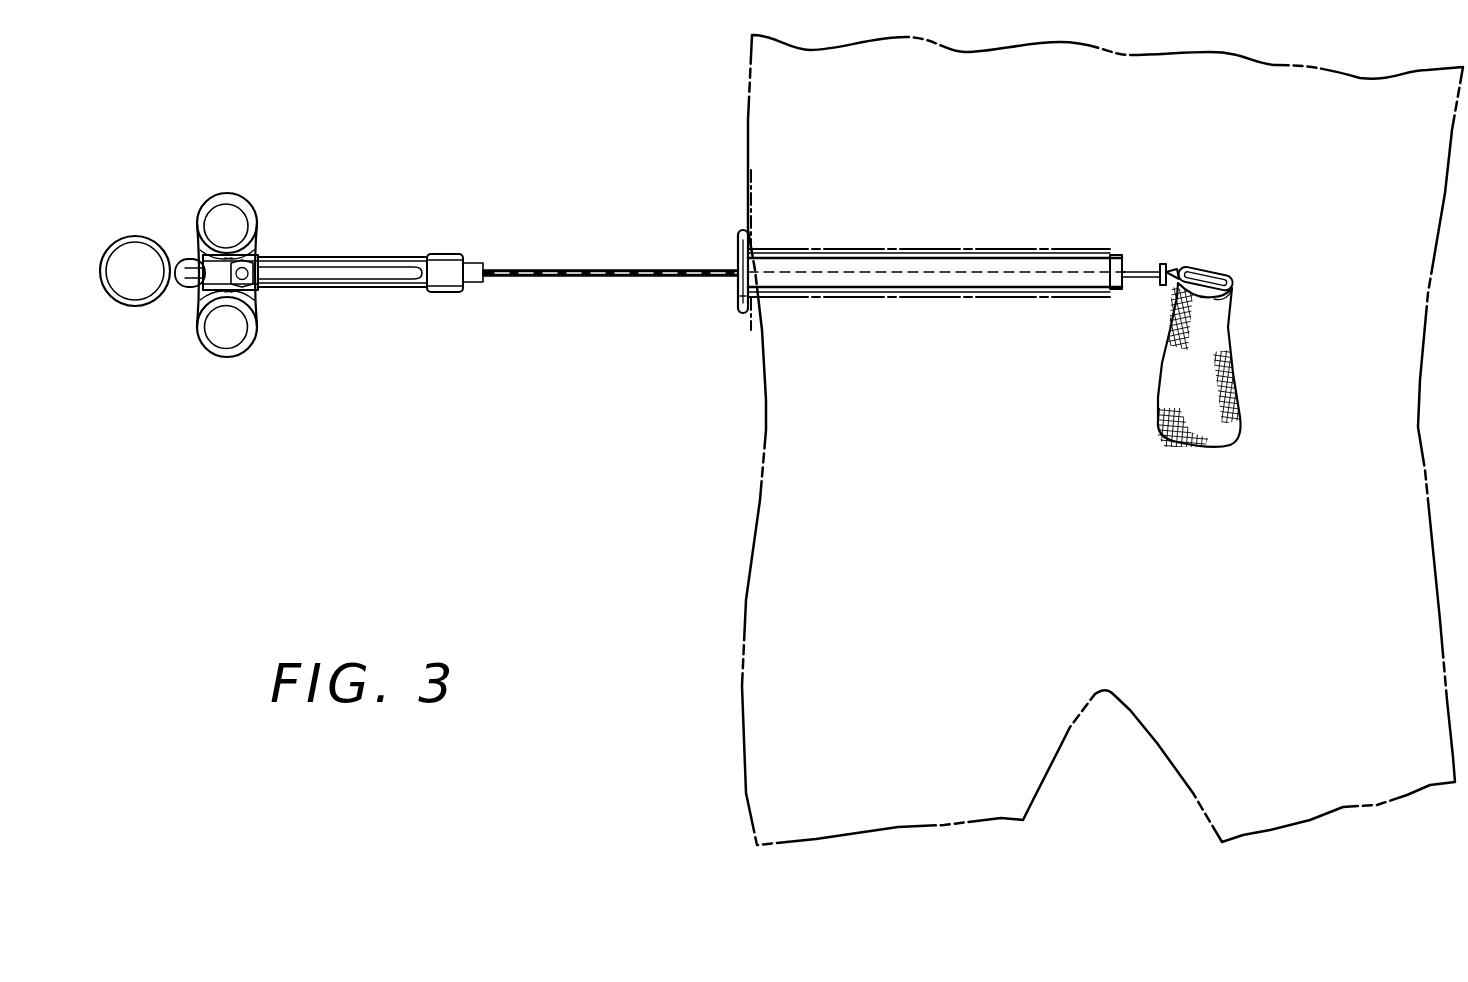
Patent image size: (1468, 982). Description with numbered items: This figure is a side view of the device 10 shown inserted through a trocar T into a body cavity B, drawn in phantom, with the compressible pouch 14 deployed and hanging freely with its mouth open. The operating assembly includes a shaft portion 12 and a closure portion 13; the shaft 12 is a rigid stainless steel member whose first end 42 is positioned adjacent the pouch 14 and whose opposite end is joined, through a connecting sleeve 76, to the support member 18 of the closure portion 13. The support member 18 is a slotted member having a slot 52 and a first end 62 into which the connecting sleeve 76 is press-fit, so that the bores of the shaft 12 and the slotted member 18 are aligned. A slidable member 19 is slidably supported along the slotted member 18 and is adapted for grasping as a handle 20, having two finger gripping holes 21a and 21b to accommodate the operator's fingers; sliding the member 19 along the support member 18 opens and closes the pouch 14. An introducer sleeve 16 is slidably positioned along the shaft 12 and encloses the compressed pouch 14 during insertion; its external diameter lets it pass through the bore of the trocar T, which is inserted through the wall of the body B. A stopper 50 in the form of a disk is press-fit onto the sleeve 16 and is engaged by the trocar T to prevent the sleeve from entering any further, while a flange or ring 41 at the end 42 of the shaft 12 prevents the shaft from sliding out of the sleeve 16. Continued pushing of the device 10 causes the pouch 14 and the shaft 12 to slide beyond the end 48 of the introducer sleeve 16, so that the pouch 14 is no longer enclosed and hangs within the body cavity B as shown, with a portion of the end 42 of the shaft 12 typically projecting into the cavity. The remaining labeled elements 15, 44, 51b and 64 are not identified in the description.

The device 10 is at (500, 415).
The shaft portion 12 is at (566, 270).
The closure portion 13 is at (513, 177).
The compressible pouch 14 is at (1175, 395).
The pouch mouth 15 is at (1240, 310).
The introducer sleeve 16 is at (900, 256).
The support member 18 is at (370, 288).
The slidable member 19 is at (257, 300).
The handle 20 is at (205, 355).
The finger gripping hole 21a is at (230, 194).
The finger gripping hole 21b is at (235, 357).
The ring 41 is at (1163, 264).
The first end of the shaft 42 is at (1175, 270).
The loop 44 is at (1212, 282).
The end of the introducer sleeve 48 is at (1125, 260).
The stopper 50 is at (737, 250).
The flange lower portion 51b is at (740, 292).
The slot 52 is at (300, 268).
The first end of the slotted member 62 is at (440, 258).
The thumb ring 64 is at (140, 237).
The connecting sleeve 76 is at (475, 282).
The body B is at (830, 436).
The trocar T is at (745, 215).